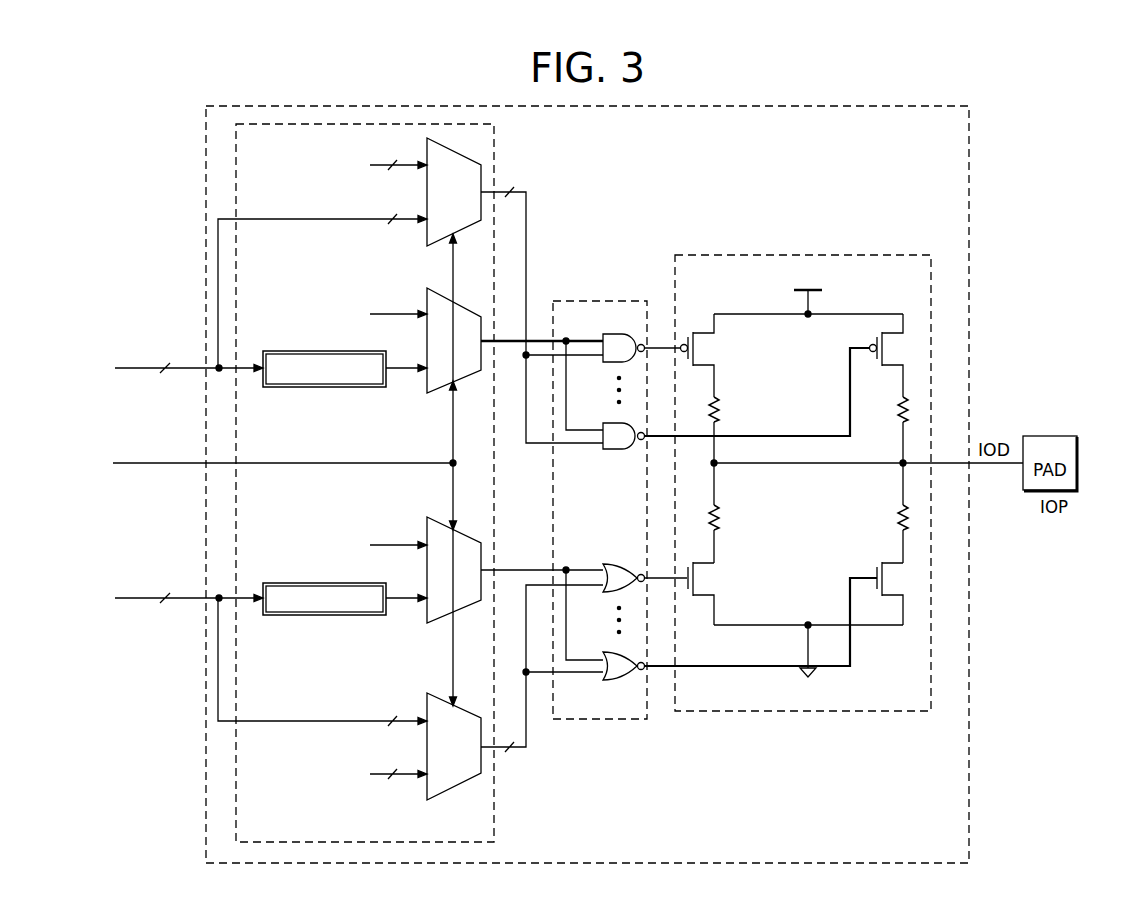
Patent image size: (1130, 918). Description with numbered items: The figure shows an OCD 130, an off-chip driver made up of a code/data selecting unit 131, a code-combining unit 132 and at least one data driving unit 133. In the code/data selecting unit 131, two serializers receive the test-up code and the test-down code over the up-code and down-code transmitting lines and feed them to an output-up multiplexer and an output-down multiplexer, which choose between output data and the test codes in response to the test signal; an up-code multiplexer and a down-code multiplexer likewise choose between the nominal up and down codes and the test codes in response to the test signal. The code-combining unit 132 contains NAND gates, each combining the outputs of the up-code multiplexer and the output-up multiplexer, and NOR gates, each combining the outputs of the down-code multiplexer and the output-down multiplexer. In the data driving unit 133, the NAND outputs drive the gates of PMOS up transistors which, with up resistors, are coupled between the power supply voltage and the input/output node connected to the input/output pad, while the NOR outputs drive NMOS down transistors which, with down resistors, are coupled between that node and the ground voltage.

The OCD 130 is at (969, 136).
The code/data selecting unit 131 is at (494, 140).
The code-combining unit 132 is at (628, 301).
The data driving unit 133 is at (895, 255).